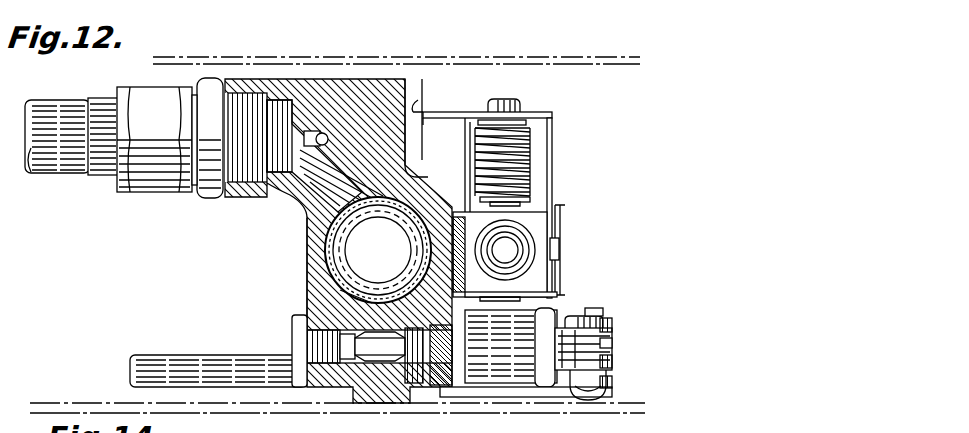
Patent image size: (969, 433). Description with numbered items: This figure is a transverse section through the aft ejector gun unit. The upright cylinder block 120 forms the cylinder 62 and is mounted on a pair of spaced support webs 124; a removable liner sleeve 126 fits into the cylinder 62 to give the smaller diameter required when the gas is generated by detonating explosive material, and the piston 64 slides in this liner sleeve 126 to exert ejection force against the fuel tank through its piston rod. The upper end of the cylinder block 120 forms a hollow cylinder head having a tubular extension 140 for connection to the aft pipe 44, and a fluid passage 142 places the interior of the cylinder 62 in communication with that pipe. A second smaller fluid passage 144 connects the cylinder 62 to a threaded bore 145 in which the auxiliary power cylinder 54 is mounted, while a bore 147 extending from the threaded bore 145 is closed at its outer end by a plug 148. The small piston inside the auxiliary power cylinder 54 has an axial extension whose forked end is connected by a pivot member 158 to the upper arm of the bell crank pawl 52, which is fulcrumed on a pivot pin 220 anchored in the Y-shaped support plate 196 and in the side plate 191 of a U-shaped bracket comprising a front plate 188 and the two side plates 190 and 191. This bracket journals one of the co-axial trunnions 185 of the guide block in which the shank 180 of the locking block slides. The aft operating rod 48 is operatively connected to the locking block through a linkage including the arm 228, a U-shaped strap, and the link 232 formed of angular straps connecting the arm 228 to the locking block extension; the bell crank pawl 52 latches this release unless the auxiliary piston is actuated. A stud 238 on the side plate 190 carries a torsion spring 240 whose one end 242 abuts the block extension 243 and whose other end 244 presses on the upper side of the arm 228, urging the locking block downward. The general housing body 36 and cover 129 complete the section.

The housing body 36 is at (306, 296).
The aft pipe 44 is at (62, 174).
The aft operating rod 48 is at (186, 356).
The bell crank pawl 52 is at (614, 352).
The auxiliary power cylinder 54 is at (483, 388).
The cylinder 62 is at (312, 237).
The piston 64 is at (388, 254).
The cylinder block 120 is at (310, 261).
The support webs 124 is at (255, 412).
The liner sleeve 126 is at (338, 286).
The cover plate 129 is at (270, 58).
The tubular extension 140 is at (241, 195).
The fluid passage 142 is at (301, 194).
The second smaller fluid passage 144 is at (391, 307).
The threaded bore 145 is at (422, 392).
The bore 147 is at (386, 357).
The plug 148 is at (293, 336).
The pivot member 158 is at (603, 312).
The shank 180 is at (510, 252).
The trunnions 185 is at (560, 256).
The front plate 188 is at (553, 170).
The side plate 190 is at (540, 111).
The side plate 191 is at (606, 321).
The Y-shaped support plate 196 is at (550, 394).
The pivot pin 220 is at (592, 401).
The arm 228 is at (553, 286).
The link 232 is at (562, 218).
The stud 238 is at (492, 122).
The torsion spring 240 is at (522, 152).
The spring end 242 is at (468, 134).
The block extension 243 is at (427, 110).
The spring end 244 is at (550, 198).